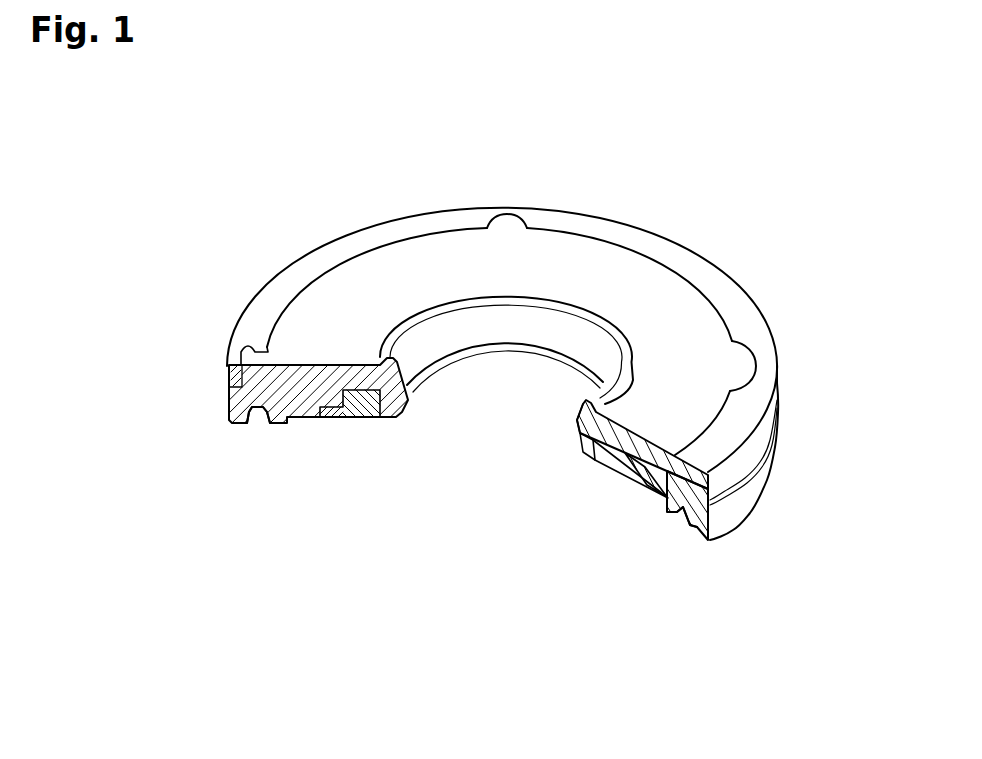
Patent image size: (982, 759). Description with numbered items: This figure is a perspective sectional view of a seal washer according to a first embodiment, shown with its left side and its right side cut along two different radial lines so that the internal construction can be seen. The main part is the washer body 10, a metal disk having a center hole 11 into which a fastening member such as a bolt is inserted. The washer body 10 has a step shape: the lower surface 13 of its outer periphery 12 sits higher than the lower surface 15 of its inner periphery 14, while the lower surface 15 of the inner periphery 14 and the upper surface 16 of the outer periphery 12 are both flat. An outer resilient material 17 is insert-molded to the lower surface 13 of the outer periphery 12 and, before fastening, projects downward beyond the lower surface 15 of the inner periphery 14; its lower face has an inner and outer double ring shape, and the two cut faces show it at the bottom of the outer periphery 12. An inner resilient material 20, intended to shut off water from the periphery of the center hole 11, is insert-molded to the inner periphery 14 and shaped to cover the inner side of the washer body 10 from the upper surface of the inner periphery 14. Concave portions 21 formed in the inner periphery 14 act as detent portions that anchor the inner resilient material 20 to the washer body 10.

The washer body 10 is at (690, 245).
The center hole 11 is at (503, 393).
The outer periphery 12 is at (630, 233).
The lower surface of the outer periphery 13 is at (670, 503).
The inner periphery 14 is at (607, 462).
The lower surface of the inner periphery 15 is at (625, 487).
The upper surface of the outer periphery 16 is at (743, 307).
The outer resilient material 17 is at (287, 418).
The inner resilient material 20 is at (403, 420).
The concave portions 21 is at (743, 362).